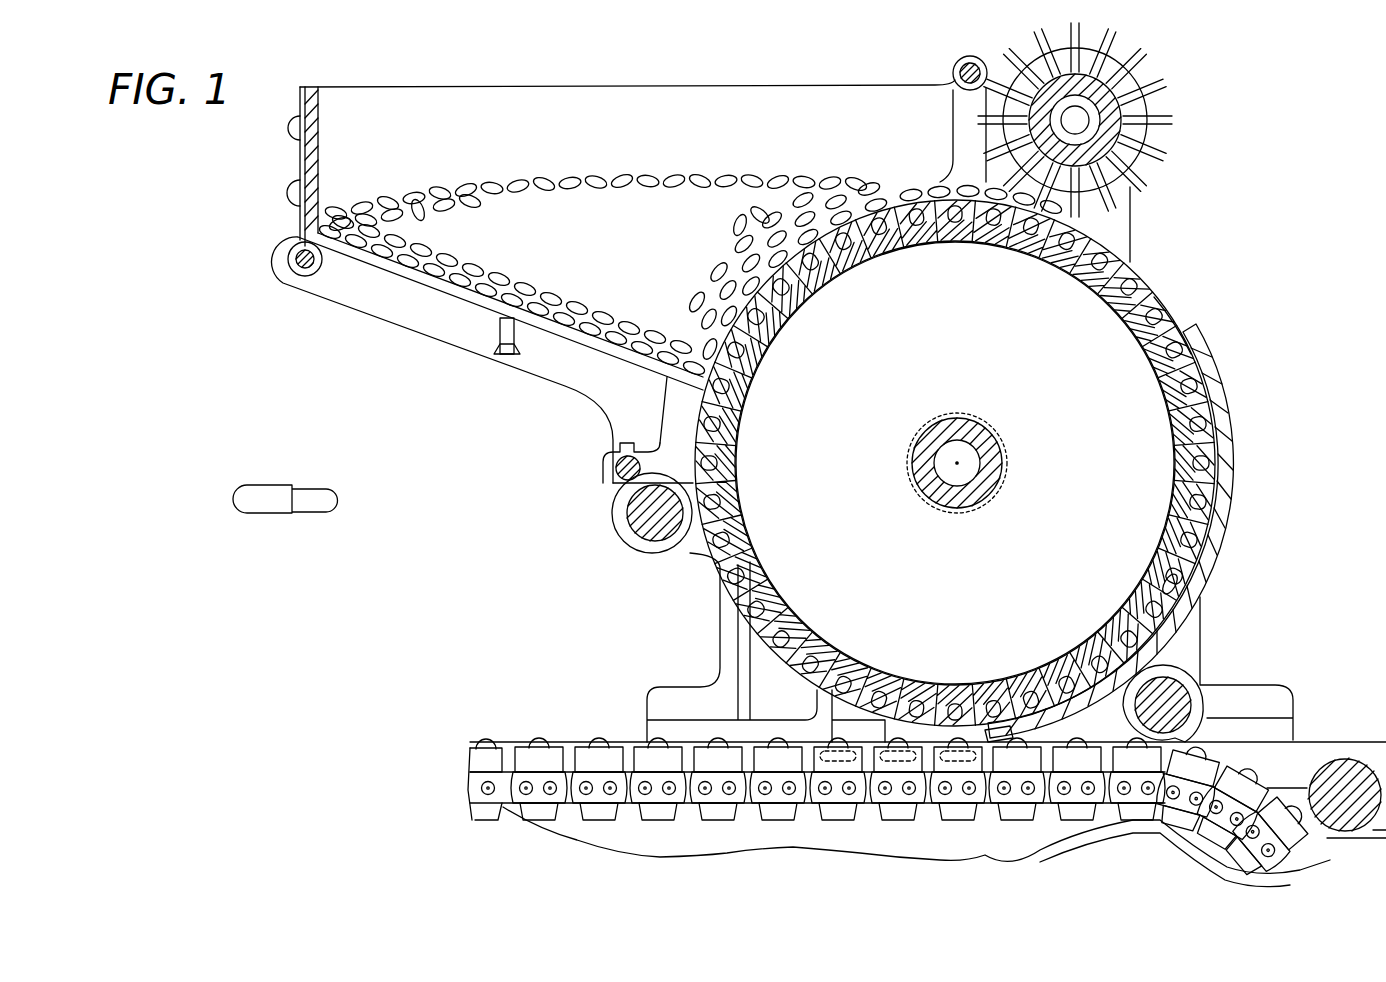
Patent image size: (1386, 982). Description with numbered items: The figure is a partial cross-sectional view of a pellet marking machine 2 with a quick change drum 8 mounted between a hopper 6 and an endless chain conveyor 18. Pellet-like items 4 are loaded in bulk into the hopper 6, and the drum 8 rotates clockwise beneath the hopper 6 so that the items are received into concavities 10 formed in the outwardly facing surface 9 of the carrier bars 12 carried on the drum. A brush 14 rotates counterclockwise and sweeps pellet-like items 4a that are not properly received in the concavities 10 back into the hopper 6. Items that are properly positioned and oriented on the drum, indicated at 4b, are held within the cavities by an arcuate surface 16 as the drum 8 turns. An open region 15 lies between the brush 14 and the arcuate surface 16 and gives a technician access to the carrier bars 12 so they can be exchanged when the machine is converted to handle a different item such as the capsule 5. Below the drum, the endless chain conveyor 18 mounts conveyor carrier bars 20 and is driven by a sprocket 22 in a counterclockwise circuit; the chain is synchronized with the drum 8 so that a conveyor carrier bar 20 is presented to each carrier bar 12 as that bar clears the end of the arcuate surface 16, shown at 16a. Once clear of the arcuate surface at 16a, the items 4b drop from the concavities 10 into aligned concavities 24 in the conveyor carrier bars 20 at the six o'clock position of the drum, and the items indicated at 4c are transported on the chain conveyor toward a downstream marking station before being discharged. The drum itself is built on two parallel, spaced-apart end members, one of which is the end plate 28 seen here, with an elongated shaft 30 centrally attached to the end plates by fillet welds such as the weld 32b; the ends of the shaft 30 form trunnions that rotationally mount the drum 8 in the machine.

The pellet marking machine 2 is at (1256, 180).
The pellet-like items 4 is at (610, 180).
The pellet-like items not properly received 4a is at (950, 177).
The properly positioned pellet-like items 4b is at (1177, 590).
The pellet-like items on conveyor 4c is at (488, 745).
The capsule 5 is at (320, 490).
The hopper 6 is at (515, 87).
The quick change drum 8 is at (1236, 540).
The outwardly facing surface 9 is at (1177, 320).
The concavities 10 is at (718, 565).
The carrier bars 12 is at (767, 612).
The brush 14 is at (1167, 120).
The open region 15 is at (1183, 303).
The arcuate surface 16 is at (1207, 562).
The end of arcuate surface 16a is at (993, 740).
The endless chain conveyor 18 is at (723, 795).
The conveyor carrier bars 20 is at (655, 758).
The sprocket 22 is at (1075, 838).
The concavities in conveyor carrier bars 24 is at (883, 757).
The end plate 28 is at (1079, 358).
The elongated shaft 30 is at (985, 478).
The fillet weld 32b is at (1003, 448).